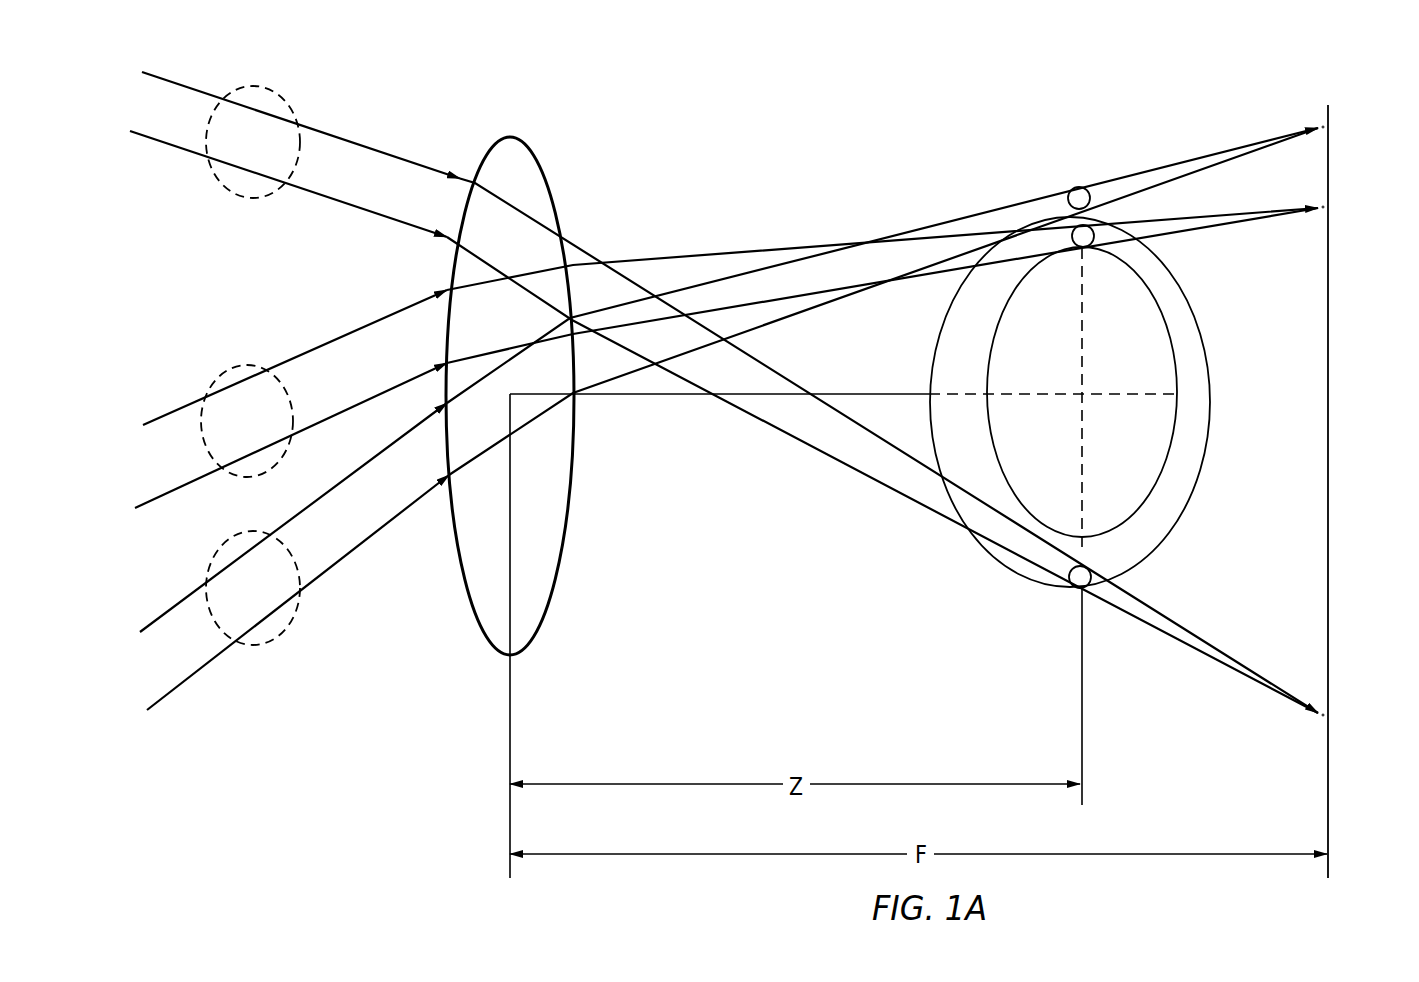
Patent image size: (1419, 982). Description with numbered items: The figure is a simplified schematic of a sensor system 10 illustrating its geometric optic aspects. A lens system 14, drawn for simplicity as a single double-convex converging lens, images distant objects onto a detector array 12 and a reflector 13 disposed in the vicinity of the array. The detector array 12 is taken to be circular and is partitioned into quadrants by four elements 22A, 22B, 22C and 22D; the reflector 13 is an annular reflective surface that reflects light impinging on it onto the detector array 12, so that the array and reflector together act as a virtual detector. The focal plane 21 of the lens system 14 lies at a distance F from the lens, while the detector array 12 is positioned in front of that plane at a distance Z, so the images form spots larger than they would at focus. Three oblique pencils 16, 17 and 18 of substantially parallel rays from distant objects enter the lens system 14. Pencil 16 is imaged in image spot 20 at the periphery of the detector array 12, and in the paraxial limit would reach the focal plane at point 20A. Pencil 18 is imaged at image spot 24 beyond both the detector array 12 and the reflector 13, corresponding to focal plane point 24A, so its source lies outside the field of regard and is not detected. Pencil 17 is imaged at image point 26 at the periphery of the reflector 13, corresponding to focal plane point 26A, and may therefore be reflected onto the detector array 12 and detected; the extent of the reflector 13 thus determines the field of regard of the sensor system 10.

The sensor system 10 is at (278, 817).
The detector array 12 is at (1173, 342).
The reflector 13 is at (1208, 437).
The lens system 14 is at (521, 140).
The pencil of light rays 16 is at (250, 362).
The pencil of light rays 17 is at (281, 94).
The pencil of light rays 18 is at (223, 546).
The image spot 20 is at (1073, 232).
The focal plane image point 20A is at (1328, 207).
The focal plane 21 is at (1326, 108).
The detector element 22A is at (1057, 356).
The detector element 22B is at (1047, 456).
The detector element 22C is at (1139, 456).
The detector element 22D is at (1145, 356).
The image spot 24 is at (1073, 188).
The focal plane image point 24A is at (1328, 127).
The image point 26 is at (1077, 588).
The focal plane image point 26A is at (1328, 717).